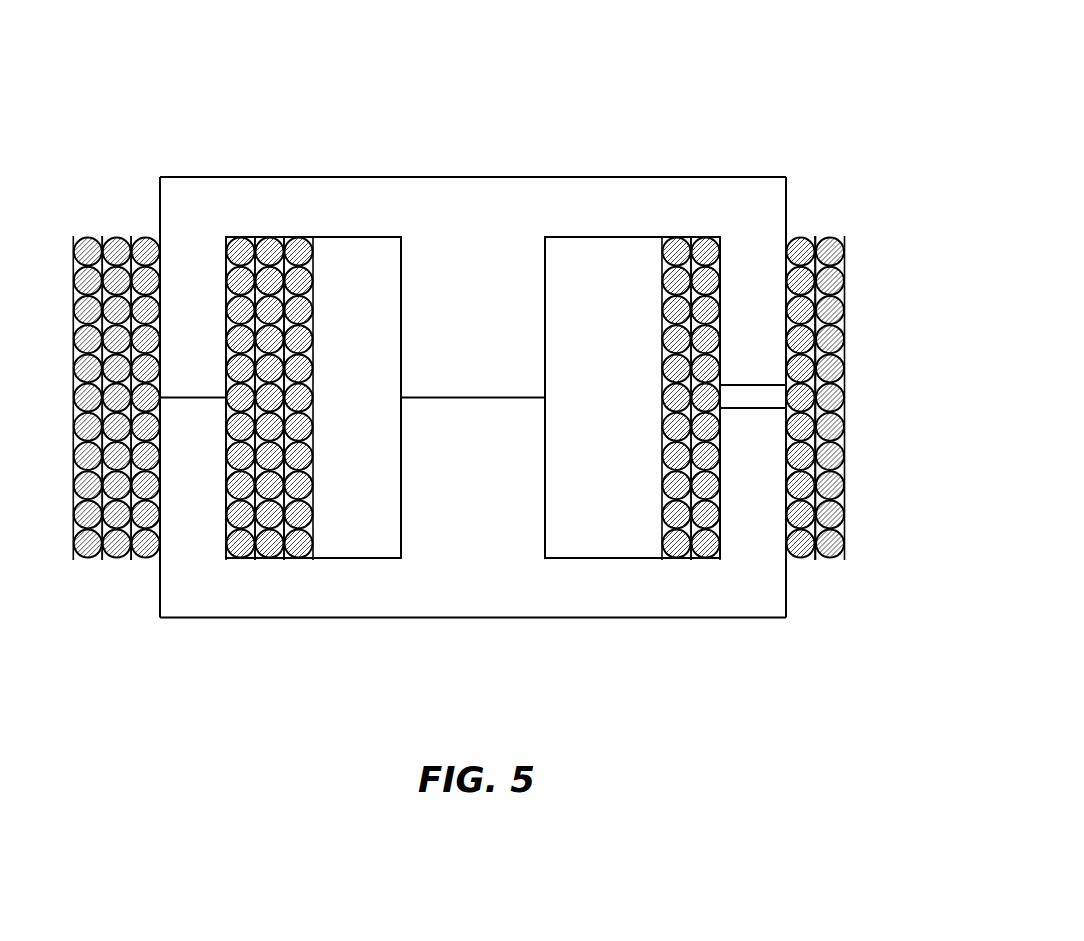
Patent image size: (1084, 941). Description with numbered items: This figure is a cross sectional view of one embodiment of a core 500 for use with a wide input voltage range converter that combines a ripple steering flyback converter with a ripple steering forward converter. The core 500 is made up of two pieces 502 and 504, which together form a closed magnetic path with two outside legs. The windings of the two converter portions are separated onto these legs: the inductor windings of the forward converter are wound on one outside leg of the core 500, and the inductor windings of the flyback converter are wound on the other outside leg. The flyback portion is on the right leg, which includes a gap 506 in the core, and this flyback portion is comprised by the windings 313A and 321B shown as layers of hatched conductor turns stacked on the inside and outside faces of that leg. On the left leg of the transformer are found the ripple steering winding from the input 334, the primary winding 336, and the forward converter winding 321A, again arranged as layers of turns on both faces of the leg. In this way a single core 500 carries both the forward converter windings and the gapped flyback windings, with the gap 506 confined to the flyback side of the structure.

The core 500 is at (473, 348).
The core piece 502 is at (474, 208).
The core piece 504 is at (474, 580).
The gap 506 is at (753, 397).
The flyback winding (L5) 313A is at (800, 237).
The forward converter winding (L3) 321A is at (298, 558).
The flyback winding (L4) 321B is at (830, 558).
The ripple steering winding (L2) 334 is at (241, 237).
The primary winding (L1) 336 is at (269, 558).